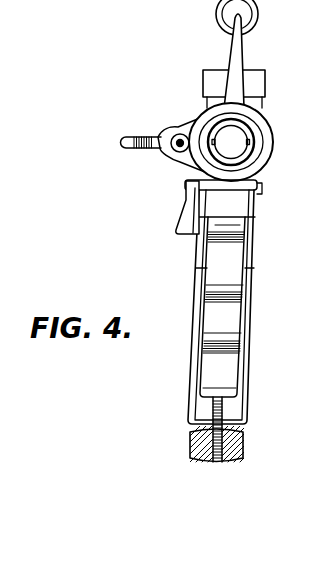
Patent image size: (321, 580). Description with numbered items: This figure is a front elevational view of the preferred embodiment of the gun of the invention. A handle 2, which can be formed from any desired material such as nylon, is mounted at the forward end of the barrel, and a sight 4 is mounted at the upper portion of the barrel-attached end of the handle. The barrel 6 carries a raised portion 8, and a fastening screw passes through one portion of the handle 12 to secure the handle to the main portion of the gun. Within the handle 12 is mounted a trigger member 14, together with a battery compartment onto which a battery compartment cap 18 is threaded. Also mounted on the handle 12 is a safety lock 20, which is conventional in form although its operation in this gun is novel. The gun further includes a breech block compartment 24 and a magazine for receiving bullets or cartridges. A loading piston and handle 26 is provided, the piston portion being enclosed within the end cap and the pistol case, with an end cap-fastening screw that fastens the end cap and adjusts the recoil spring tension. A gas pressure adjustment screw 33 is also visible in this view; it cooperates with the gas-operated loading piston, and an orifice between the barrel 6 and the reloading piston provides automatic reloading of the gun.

The handle 2 is at (235, 258).
The sight 4 is at (244, 50).
The barrel 6 is at (250, 132).
The raised portion 8 is at (274, 157).
The handle 12 is at (261, 328).
The trigger member 14 is at (232, 405).
The battery compartment cap 18 is at (188, 445).
The safety lock 20 is at (184, 213).
The breech block compartment 24 is at (265, 73).
The loading piston and handle 26 is at (143, 135).
The gas pressure adjustment screw 33 is at (173, 161).